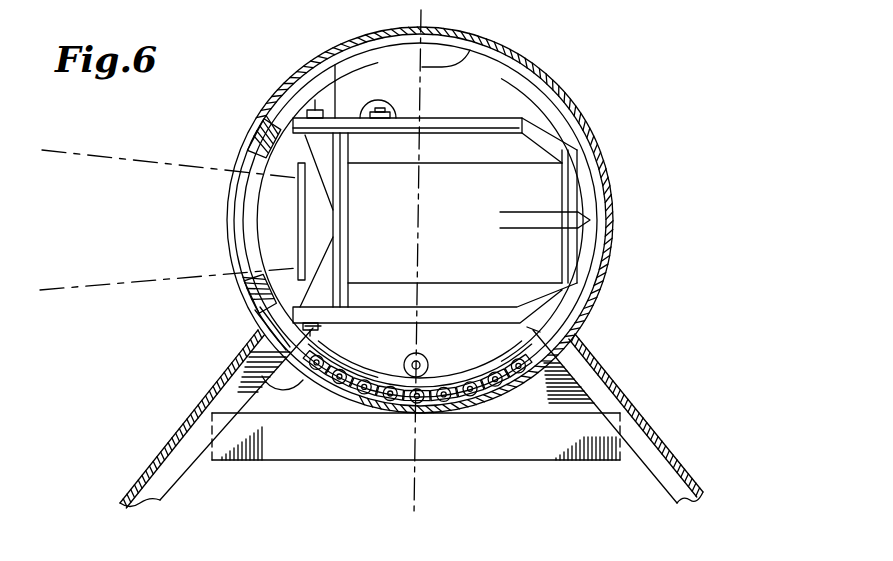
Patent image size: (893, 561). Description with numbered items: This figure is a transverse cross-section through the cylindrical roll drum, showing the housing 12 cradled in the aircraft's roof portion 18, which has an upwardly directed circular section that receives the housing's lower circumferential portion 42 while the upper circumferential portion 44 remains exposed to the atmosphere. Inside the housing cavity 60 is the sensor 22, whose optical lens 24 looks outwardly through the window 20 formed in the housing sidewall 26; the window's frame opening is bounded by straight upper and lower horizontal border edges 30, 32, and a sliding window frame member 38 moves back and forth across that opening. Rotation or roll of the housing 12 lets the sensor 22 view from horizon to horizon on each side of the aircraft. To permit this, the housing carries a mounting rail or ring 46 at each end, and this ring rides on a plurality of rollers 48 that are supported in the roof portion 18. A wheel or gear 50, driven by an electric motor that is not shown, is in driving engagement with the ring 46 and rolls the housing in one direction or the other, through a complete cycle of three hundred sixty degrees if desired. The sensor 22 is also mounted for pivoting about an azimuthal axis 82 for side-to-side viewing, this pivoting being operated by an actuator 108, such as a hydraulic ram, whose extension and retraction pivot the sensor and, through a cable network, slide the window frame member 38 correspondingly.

The housing 12 is at (612, 162).
The roof portion 18 is at (597, 388).
The window 20 is at (234, 252).
The sensor 22 is at (542, 198).
The optical lens 24 is at (298, 217).
The sidewall 26 is at (613, 225).
The upper horizontal border edge 30 is at (251, 310).
The lower horizontal border edge 32 is at (258, 128).
The window frame member 38 is at (243, 160).
The lower circumferential portion 42 is at (262, 380).
The upper circumferential portion 44 is at (590, 119).
The ring 46 is at (513, 387).
The rollers 48 is at (361, 397).
The wheel or gear 50 is at (452, 373).
The housing cavity 60 is at (505, 100).
The azimuthal axis 82 is at (440, 62).
The actuator 108 is at (373, 98).